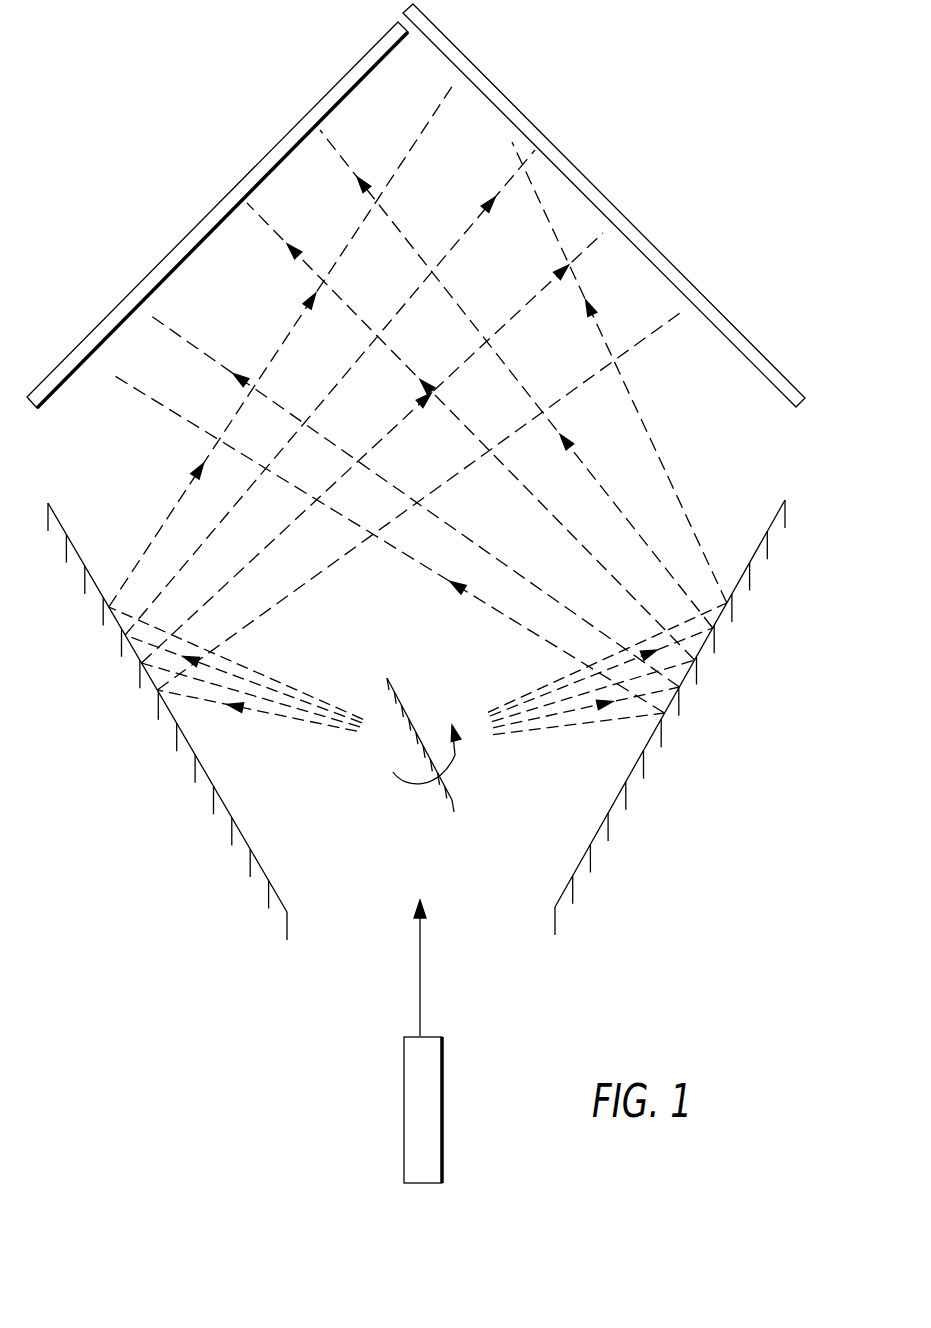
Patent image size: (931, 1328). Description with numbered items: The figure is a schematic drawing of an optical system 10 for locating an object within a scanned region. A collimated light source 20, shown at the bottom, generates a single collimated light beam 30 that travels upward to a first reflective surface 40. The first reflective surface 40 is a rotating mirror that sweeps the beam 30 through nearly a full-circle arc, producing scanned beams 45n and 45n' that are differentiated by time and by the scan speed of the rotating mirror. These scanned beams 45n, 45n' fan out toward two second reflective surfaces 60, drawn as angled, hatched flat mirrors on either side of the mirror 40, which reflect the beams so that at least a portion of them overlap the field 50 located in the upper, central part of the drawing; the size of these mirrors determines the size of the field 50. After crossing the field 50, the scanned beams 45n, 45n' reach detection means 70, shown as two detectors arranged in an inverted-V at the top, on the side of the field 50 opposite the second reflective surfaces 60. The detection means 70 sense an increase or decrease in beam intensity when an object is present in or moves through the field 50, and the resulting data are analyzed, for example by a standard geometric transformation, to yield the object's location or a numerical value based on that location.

The optical system 10 is at (173, 797).
The collimated light source 20 is at (541, 1087).
The collimated light beam 30 is at (424, 960).
The first reflective surface 40 is at (396, 704).
The scanned beams 45n is at (388, 387).
The scanned beams 45n' is at (424, 421).
The field 50 is at (447, 217).
The second reflective surfaces 60 is at (83, 578).
The detection means 70 is at (284, 137).